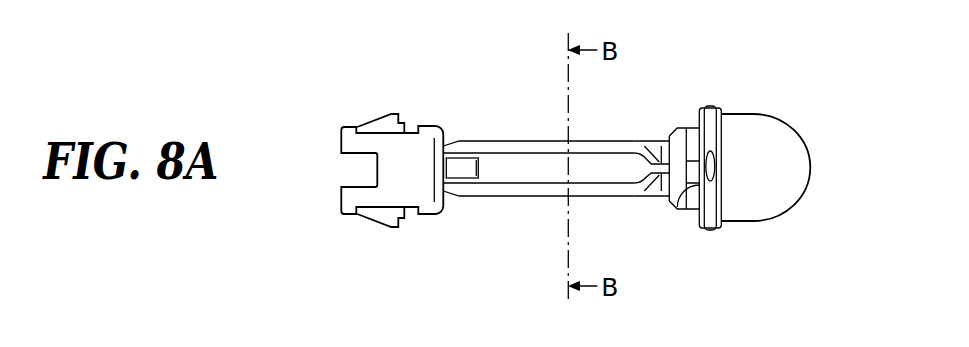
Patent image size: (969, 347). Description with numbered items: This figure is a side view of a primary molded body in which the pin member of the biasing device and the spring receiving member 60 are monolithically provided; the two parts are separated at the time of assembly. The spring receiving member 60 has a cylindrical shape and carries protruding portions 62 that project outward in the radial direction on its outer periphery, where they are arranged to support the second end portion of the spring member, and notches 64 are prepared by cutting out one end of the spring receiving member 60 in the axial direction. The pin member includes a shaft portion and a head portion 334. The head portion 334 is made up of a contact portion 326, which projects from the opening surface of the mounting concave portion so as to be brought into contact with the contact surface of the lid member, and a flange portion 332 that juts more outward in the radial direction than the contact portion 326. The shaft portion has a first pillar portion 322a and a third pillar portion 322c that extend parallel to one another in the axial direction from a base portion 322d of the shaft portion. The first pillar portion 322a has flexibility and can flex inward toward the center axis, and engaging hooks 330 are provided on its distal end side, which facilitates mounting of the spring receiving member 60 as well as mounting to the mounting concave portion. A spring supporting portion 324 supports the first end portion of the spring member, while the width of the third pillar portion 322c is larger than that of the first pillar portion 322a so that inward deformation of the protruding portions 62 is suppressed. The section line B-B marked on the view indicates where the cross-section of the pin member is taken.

The spring receiving member 60 is at (423, 122).
The protruding portions 62 is at (401, 118).
The notches 64 is at (373, 168).
The engaging hooks 330 is at (470, 162).
The third pillar portion 322c is at (523, 139).
The first pillar portion 322a is at (588, 162).
The base portion 322d is at (666, 138).
The spring supporting portion 324 is at (672, 208).
The flange portion 332 is at (710, 229).
The contact portion 326 is at (780, 203).
The head portion 334 is at (847, 270).